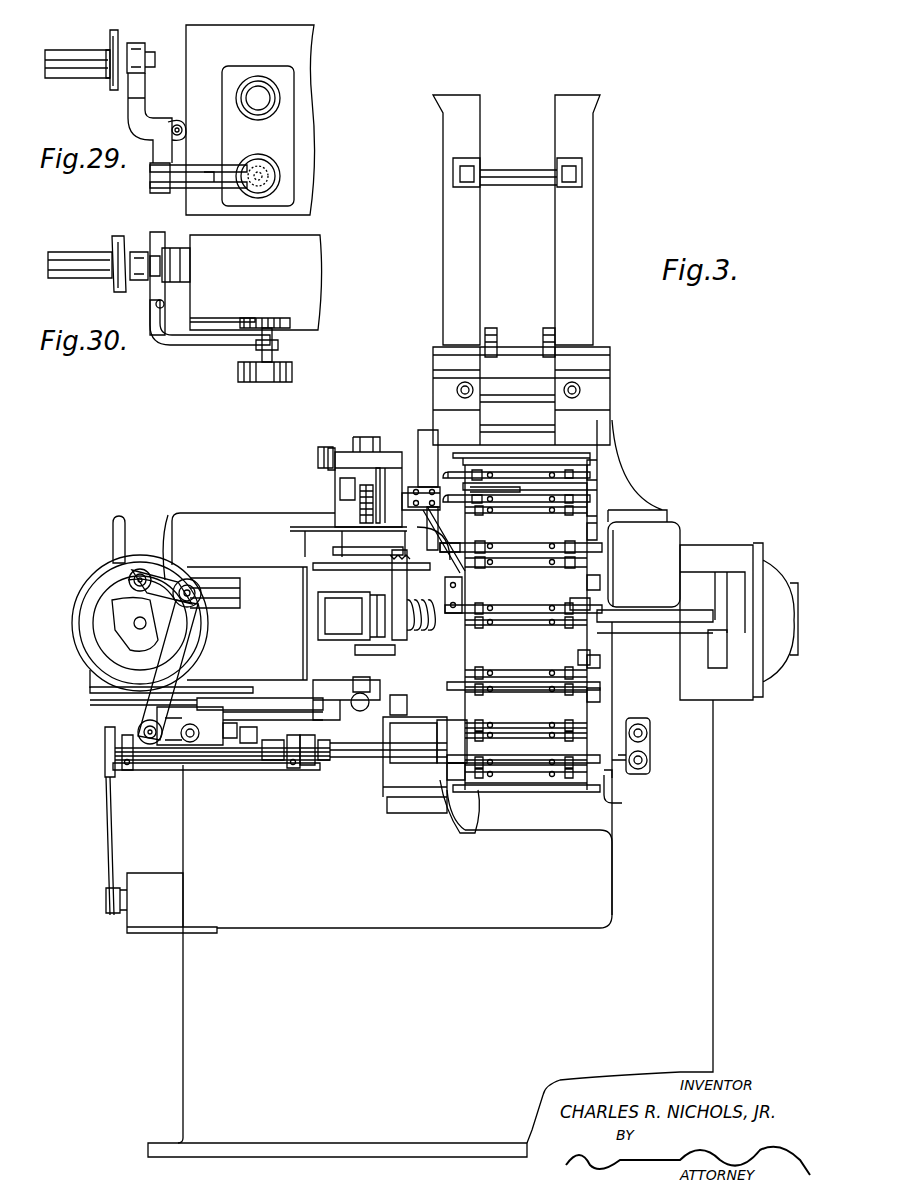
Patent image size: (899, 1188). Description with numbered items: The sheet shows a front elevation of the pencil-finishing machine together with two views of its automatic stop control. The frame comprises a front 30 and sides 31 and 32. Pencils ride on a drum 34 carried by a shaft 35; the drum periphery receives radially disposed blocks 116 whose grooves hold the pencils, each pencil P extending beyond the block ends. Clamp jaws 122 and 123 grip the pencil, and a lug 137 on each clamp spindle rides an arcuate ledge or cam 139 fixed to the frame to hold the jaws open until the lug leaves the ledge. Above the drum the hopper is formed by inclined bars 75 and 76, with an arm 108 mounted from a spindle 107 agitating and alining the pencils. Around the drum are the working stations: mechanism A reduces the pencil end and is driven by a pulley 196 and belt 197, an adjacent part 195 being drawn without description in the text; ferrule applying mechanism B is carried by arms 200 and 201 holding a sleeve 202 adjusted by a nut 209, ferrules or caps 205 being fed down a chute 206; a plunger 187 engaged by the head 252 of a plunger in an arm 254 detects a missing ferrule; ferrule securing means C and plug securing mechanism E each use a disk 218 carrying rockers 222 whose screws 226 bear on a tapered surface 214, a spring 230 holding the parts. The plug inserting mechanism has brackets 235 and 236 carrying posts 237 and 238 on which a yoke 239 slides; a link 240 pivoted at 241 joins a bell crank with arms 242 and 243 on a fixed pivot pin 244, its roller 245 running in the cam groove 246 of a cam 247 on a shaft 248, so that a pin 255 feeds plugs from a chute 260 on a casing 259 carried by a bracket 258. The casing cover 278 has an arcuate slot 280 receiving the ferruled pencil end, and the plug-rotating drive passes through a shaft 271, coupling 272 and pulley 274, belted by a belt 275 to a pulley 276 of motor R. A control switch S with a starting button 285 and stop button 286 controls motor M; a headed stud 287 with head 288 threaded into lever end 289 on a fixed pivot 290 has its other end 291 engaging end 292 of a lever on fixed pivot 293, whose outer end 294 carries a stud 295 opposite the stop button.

In FIG. 3, the front 30 is at (279, 954).
In FIG. 3, the side 31 is at (172, 993).
In FIG. 3, the side 32 is at (716, 882).
In FIG. 3, the drum 34 is at (528, 442).
In FIG. 3, the shaft 35 is at (585, 650).
In FIG. 3, the inclined strips or bars 75 is at (446, 148).
In FIG. 3, the inclined strips or bars 76 is at (584, 144).
In FIG. 3, the spindle 107 is at (516, 362).
In FIG. 3, the arm 108 is at (548, 330).
In FIG. 3, the blocks 116 is at (548, 605).
In FIG. 3, the jaw 122 is at (530, 838).
In FIG. 3, the jaw 123 is at (566, 793).
In FIG. 3, the lug 137 is at (592, 500).
In FIG. 3, the arcuate ledge or cam 139 is at (592, 563).
In FIG. 3, the plunger 187 is at (450, 570).
In FIG. 3, the bar 195 is at (495, 490).
In FIG. 3, the pulley 196 is at (318, 452).
In FIG. 3, the belt 197 is at (332, 445).
In FIG. 3, the arm 200 is at (360, 483).
In FIG. 3, the arm 201 is at (378, 470).
In FIG. 3, the sleeve 202 is at (414, 495).
In FIG. 3, the ferrule or cap 205 is at (521, 535).
In FIG. 3, the chute 206 is at (430, 420).
In FIG. 3, the nut 209 is at (332, 523).
In FIG. 3, the tapered surface 214 is at (370, 645).
In FIG. 3, the disk 218 is at (446, 805).
In FIG. 3, the levers or rockers 222 is at (320, 580).
In FIG. 3, the adjustable screws 226 is at (320, 600).
In FIG. 3, the spring 230 is at (462, 780).
In FIG. 3, the bracket 235 is at (90, 690).
In FIG. 3, the bracket 236 is at (265, 688).
In FIG. 3, the supporting post 237 is at (236, 700).
In FIG. 3, the supporting post 238 is at (248, 770).
In FIG. 3, the yoke 239 is at (212, 708).
In FIG. 3, the link 240 is at (154, 760).
In FIG. 3, the pivot 241 is at (137, 728).
In FIG. 3, the arm 242 is at (170, 660).
In FIG. 3, the arm 243 is at (168, 515).
In FIG. 3, the fixed pivot pin 244 is at (190, 588).
In FIG. 3, the roller 245 is at (118, 566).
In FIG. 3, the cam groove 246 is at (98, 598).
In FIG. 3, the cam 247 is at (180, 620).
In FIG. 3, the shaft 248 is at (134, 628).
In FIG. 3, the head 252 is at (467, 535).
In FIG. 3, the arm 254 is at (333, 550).
In FIG. 3, the reciprocatable rod or pin 255 is at (230, 740).
In FIG. 3, the bracket 258 is at (350, 700).
In FIG. 3, the casing 259 is at (372, 745).
In FIG. 3, the chute 260 is at (402, 704).
In FIG. 3, the shaft 271 is at (318, 765).
In FIG. 3, the coupling 272 is at (282, 765).
In FIG. 3, the pulley 274 is at (103, 740).
In FIG. 3, the belt 275 is at (106, 792).
In FIG. 3, the pulley 276 is at (106, 900).
In FIG. 3, the cover 278 is at (523, 745).
In FIG. 3, the arcuate slot 280 is at (450, 716).
In FIG. 29, the starting button 285 is at (270, 97).
In FIG. 30, the starting button 285 is at (232, 304).
In FIG. 3, the starting button 285 is at (650, 733).
In FIG. 29, the stop button 286 is at (276, 176).
In FIG. 30, the stop button 286 is at (258, 386).
In FIG. 3, the stop button 286 is at (648, 760).
In FIG. 29, the headed stud 287 is at (158, 62).
In FIG. 30, the headed stud 287 is at (112, 278).
In FIG. 29, the head 288 is at (114, 50).
In FIG. 30, the head 288 is at (110, 246).
In FIG. 29, the lever end 289 is at (130, 98).
In FIG. 30, the lever end 289 is at (140, 250).
In FIG. 3, the lever end 289 is at (660, 756).
In FIG. 29, the fixed pivot 290 is at (176, 124).
In FIG. 30, the fixed pivot 290 is at (186, 254).
In FIG. 29, the lever end 291 is at (160, 168).
In FIG. 3, the lever end 291 is at (622, 792).
In FIG. 29, the lever end 292 is at (164, 186).
In FIG. 30, the lever end 292 is at (152, 290).
In FIG. 29, the fixed pivot 293 is at (152, 168).
In FIG. 30, the fixed pivot 293 is at (160, 330).
In FIG. 29, the outer end 294 is at (214, 175).
In FIG. 30, the outer end 294 is at (206, 350).
In FIG. 3, the outer end 294 is at (622, 800).
In FIG. 30, the stud 295 is at (272, 352).
In FIG. 3, the mechanism for reducing end of pencil A is at (376, 437).
In FIG. 3, the ferrule applying mechanism B is at (326, 495).
In FIG. 3, the ferrule securing means C is at (351, 616).
In FIG. 3, the plug securing mechanism E is at (362, 780).
In FIG. 3, the motor M is at (752, 552).
In FIG. 29, the pencil P is at (64, 76).
In FIG. 30, the pencil P is at (62, 254).
In FIG. 3, the pencil P is at (540, 498).
In FIG. 3, the motor R is at (168, 903).
In FIG. 29, the control switch S is at (284, 136).
In FIG. 30, the control switch S is at (300, 318).
In FIG. 3, the control switch S is at (652, 746).